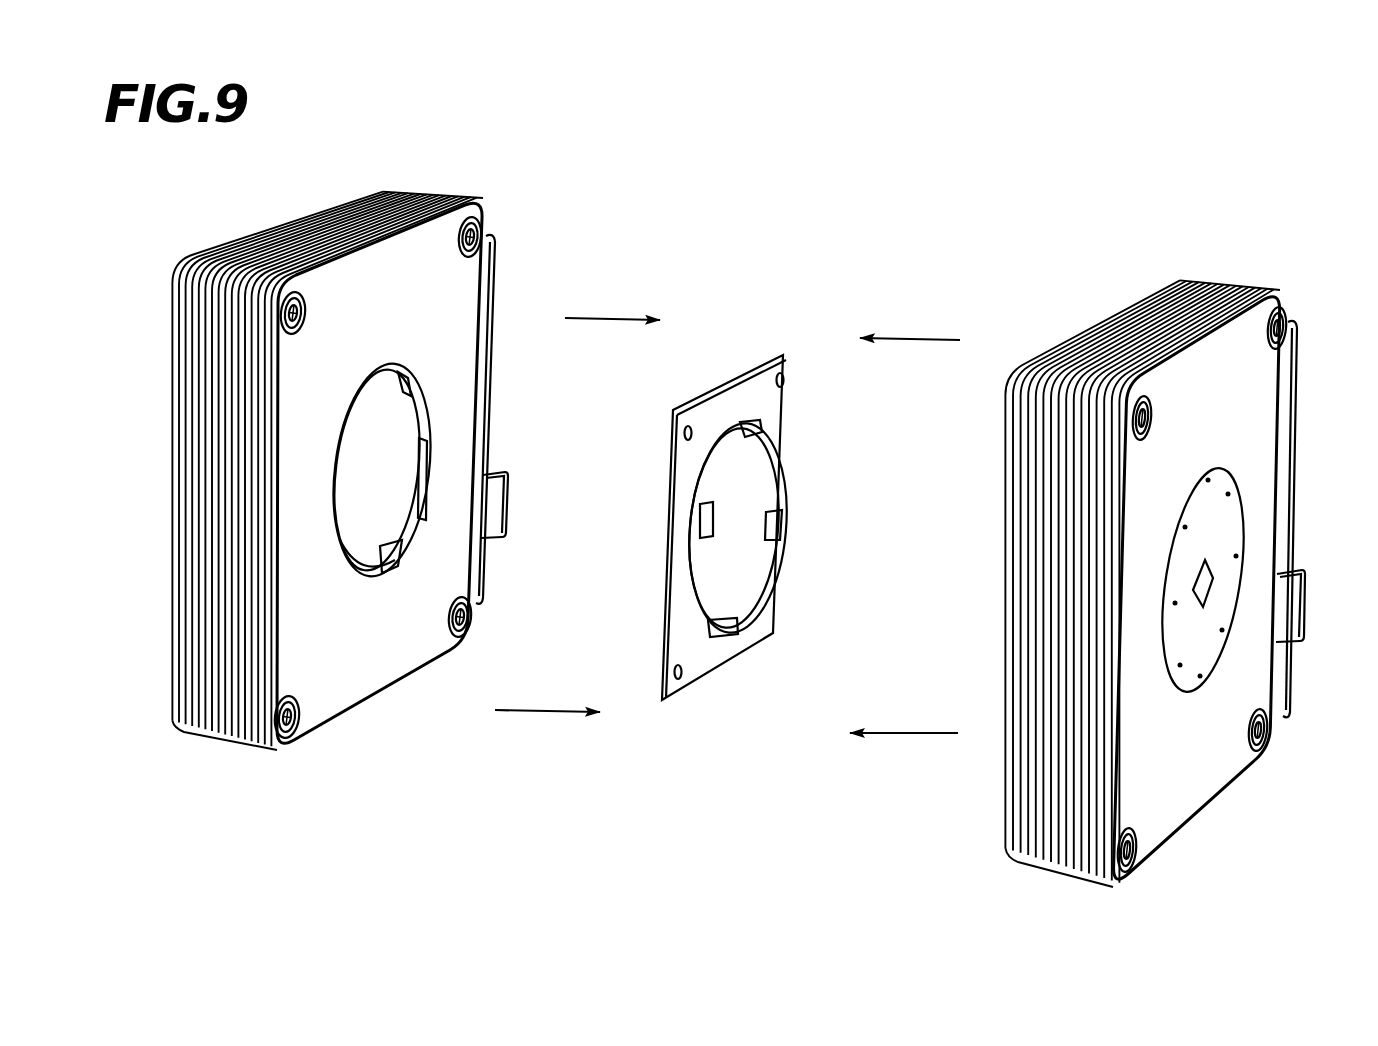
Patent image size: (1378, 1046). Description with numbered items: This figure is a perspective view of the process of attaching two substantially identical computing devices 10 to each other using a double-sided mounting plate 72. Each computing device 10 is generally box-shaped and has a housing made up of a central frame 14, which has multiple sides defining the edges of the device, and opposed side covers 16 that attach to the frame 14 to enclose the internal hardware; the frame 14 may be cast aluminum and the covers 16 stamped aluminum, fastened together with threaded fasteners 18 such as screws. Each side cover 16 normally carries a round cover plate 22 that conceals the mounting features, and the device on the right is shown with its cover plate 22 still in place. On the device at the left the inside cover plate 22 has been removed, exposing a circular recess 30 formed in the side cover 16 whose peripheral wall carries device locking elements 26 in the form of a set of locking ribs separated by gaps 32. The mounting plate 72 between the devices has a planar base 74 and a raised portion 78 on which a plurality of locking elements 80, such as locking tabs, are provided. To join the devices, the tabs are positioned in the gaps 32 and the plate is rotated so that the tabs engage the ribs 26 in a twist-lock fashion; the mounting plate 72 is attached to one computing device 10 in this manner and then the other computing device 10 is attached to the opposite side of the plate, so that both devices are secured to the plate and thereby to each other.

The computing device 10 is at (489, 166).
The central frame 14 is at (302, 237).
The side covers 16 is at (172, 720).
The threaded fasteners 18 is at (455, 268).
The cover plate 22 is at (1198, 640).
The device locking elements 26 is at (399, 382).
The circular recess 30 is at (445, 388).
The gaps 32 is at (428, 417).
The double-sided mounting plate 72 is at (732, 330).
The planar base 74 is at (775, 410).
The raised portion 78 is at (758, 513).
The locking elements 80 is at (752, 428).